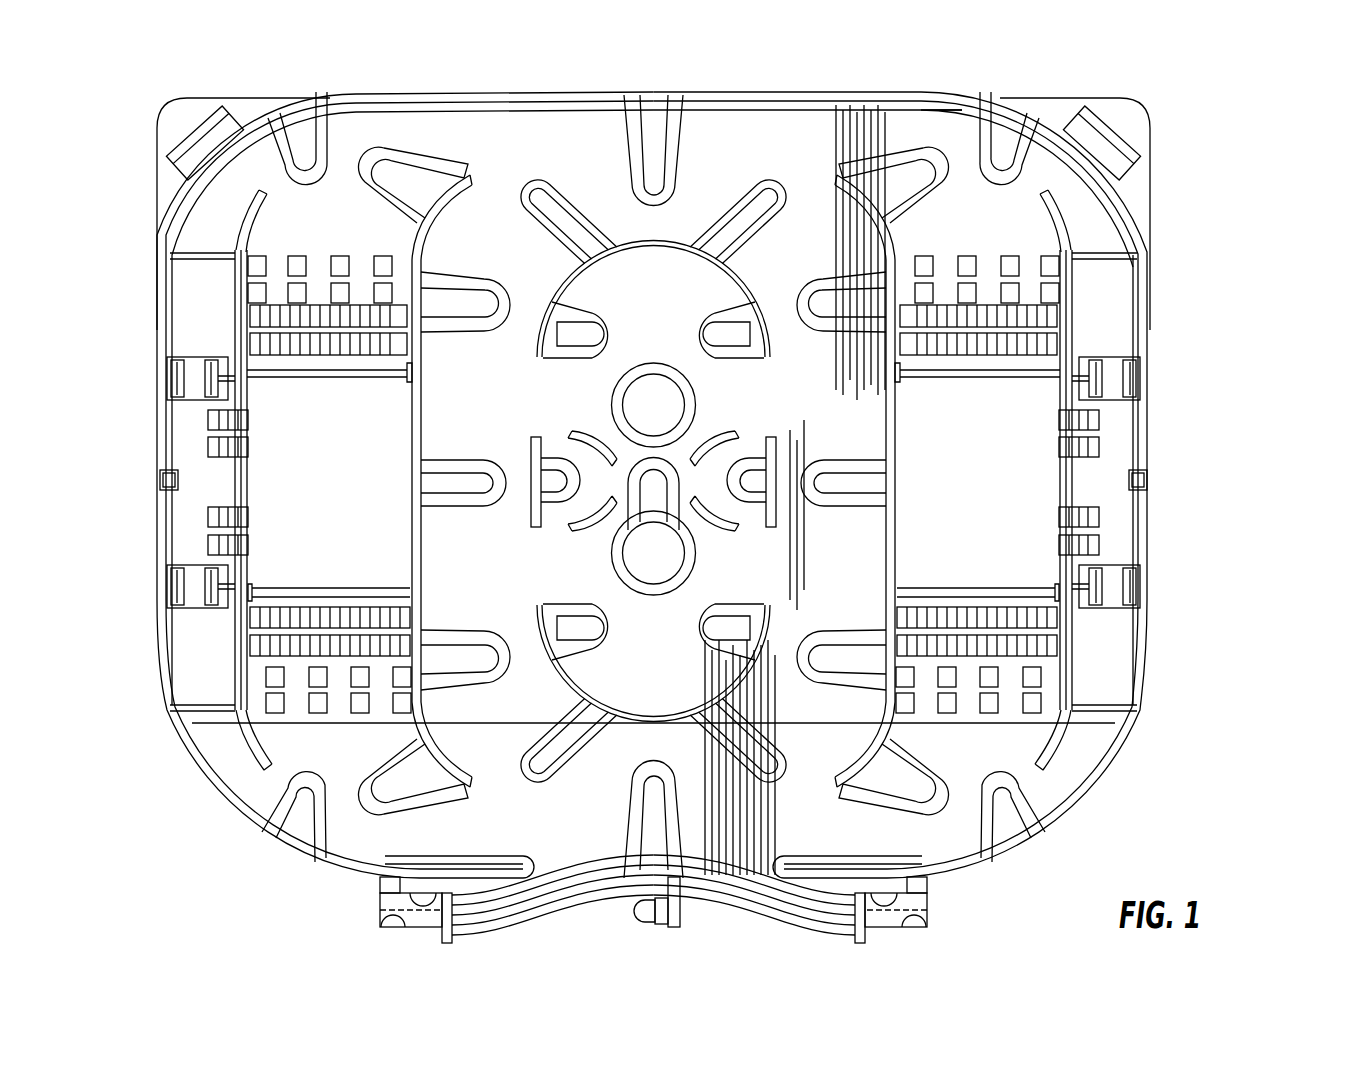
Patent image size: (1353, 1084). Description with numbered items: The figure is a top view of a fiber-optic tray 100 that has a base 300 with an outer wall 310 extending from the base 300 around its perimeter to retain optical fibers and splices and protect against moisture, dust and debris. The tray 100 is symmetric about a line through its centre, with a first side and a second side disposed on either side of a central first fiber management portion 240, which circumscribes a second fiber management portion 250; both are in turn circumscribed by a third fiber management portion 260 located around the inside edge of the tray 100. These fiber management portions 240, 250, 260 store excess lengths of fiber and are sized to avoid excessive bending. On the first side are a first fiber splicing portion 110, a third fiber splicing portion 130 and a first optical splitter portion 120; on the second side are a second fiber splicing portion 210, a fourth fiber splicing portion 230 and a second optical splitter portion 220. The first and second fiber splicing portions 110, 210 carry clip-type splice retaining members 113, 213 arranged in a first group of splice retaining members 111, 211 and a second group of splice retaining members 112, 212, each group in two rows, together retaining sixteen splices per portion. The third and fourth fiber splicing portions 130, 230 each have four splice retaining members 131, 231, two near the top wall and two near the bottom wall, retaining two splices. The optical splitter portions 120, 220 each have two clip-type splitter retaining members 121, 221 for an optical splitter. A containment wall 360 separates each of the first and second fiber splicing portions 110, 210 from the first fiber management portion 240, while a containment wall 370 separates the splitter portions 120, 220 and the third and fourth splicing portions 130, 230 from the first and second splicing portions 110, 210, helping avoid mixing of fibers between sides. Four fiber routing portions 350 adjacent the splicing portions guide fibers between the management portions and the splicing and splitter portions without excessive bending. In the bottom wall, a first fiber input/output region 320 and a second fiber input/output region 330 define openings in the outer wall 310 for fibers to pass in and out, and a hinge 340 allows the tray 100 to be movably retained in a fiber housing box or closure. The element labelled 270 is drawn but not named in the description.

The fiber-optic tray 100 is at (702, 502).
The first fiber splicing portion 110 is at (262, 390).
The first group of splice retaining members 111 is at (243, 330).
The second group of splice retaining members 112 is at (240, 628).
The splice retaining member 113 is at (283, 300).
The first optical splitter portion 120 is at (182, 424).
The splitter retaining member 121 is at (175, 375).
The third fiber splicing portion 130 is at (210, 490).
The splice retaining member 131 is at (215, 545).
The second fiber splicing portion 210 is at (1020, 405).
The first group of splice retaining members 211 is at (1064, 330).
The second group of splice retaining members 212 is at (1067, 628).
The splice retaining member 213 is at (1027, 300).
The second optical splitter portion 220 is at (1128, 452).
The splitter retaining member 221 is at (1132, 375).
The fourth fiber splicing portion 230 is at (1097, 492).
The splice retaining member 231 is at (1092, 545).
The first fiber management portion 240 is at (800, 190).
The second fiber management portion 250 is at (670, 272).
The third fiber management portion 260 is at (955, 125).
The second lower curved retention tab 270 is at (1073, 680).
The base 300 is at (647, 502).
The outer wall 310 is at (386, 92).
The first fiber input/output region 320 is at (375, 905).
The second fiber input/output region 330 is at (932, 910).
The hinge 340 is at (688, 915).
The fiber routing portion 350 is at (292, 135).
The containment wall 360 is at (410, 727).
The containment wall 370 is at (230, 655).